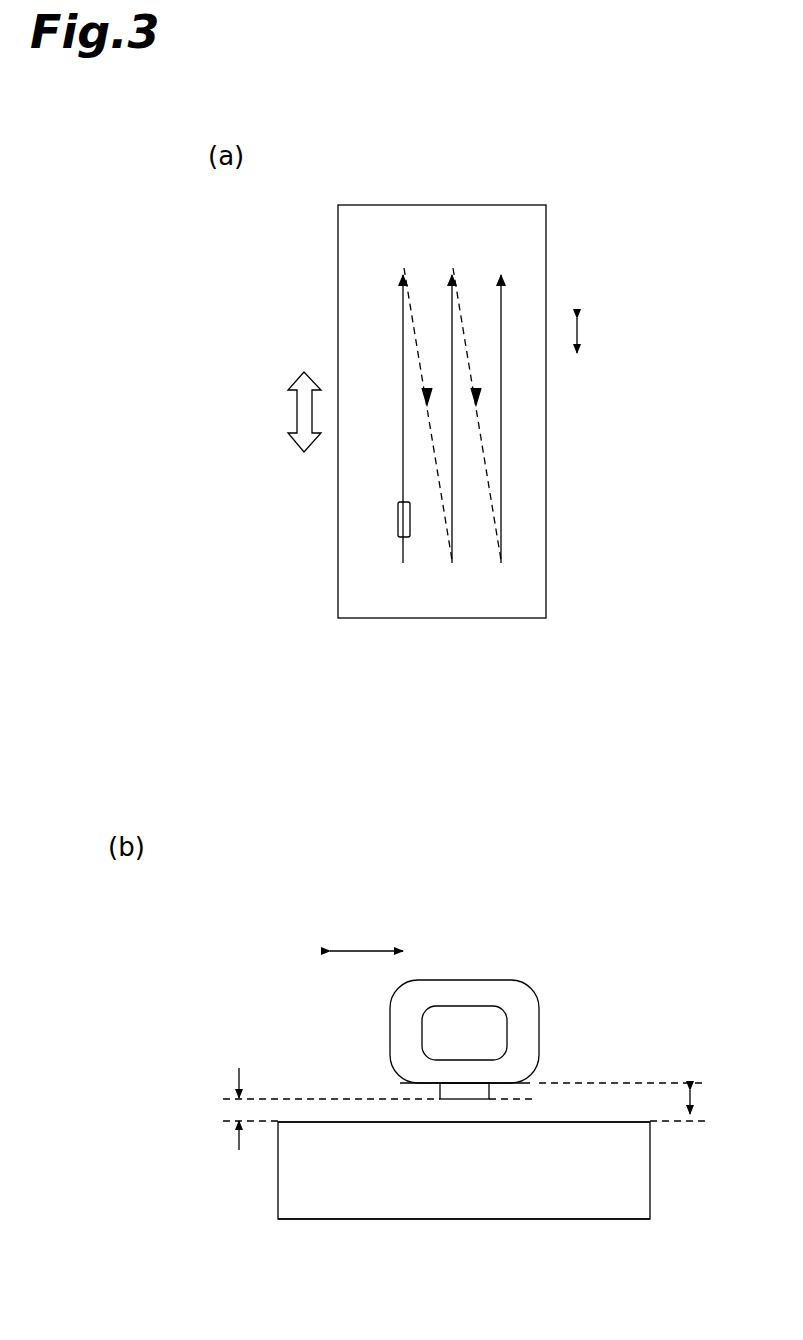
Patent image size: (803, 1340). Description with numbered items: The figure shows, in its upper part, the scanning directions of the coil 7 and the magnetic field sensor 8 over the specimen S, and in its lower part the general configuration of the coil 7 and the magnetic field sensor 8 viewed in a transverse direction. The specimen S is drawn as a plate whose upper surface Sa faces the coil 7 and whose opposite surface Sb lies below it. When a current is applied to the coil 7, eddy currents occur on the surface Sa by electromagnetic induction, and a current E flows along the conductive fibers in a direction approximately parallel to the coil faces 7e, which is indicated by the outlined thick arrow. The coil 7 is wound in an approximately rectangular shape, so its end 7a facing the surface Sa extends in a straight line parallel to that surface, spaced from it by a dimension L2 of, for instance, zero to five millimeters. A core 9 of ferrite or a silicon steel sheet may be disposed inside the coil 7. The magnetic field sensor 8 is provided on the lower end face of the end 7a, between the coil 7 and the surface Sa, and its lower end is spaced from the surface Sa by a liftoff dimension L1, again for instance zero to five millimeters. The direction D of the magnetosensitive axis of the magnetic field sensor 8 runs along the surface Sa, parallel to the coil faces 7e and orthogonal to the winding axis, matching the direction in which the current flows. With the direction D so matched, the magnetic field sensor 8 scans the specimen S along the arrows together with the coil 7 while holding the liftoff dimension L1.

The specimen S is at (336, 298).
The surface Sa is at (312, 1121).
The lower surface of substrate Sb is at (312, 1220).
The coil 7 is at (397, 525).
The end 7a is at (493, 1073).
The coil faces 7e is at (531, 1028).
The magnetic field sensor 8 is at (462, 1099).
The core 9 is at (478, 1017).
The direction of magnetosensitive axis D is at (578, 337).
The current E is at (296, 410).
The dimension L1 is at (238, 1112).
The dimension L2 is at (714, 1104).